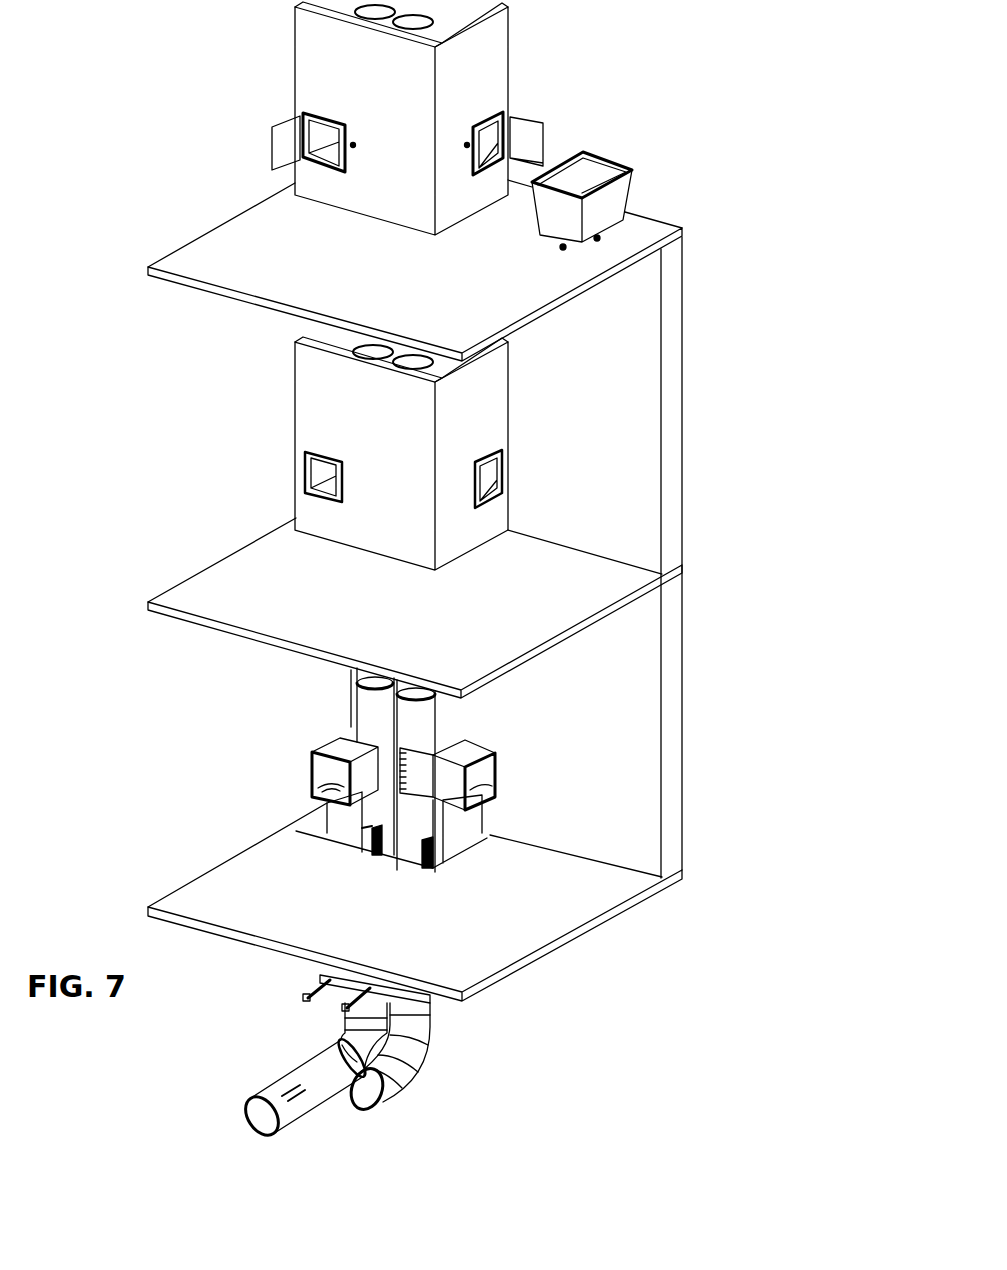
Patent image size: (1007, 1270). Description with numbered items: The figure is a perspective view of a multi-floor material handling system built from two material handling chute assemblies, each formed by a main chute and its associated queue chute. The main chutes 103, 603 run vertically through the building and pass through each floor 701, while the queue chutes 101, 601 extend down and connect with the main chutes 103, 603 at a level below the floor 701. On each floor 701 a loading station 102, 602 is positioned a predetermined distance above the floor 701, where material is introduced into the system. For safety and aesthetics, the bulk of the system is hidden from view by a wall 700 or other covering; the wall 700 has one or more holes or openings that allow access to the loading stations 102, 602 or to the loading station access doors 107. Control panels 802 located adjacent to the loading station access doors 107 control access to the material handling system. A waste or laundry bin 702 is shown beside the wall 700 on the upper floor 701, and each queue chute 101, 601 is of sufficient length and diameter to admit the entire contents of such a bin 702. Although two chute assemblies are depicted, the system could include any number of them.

The wall 700 is at (457, 62).
The floor 701 is at (462, 318).
The waste or laundry bin 702 is at (600, 168).
The loading station access door 107 is at (285, 145).
The control panel 802 is at (353, 145).
The main chute 103 is at (372, 709).
The main chute 603 is at (415, 731).
The loading station 102 is at (310, 752).
The loading station 602 is at (493, 755).
The queue chute 101 is at (338, 828).
The queue chute 601 is at (457, 828).